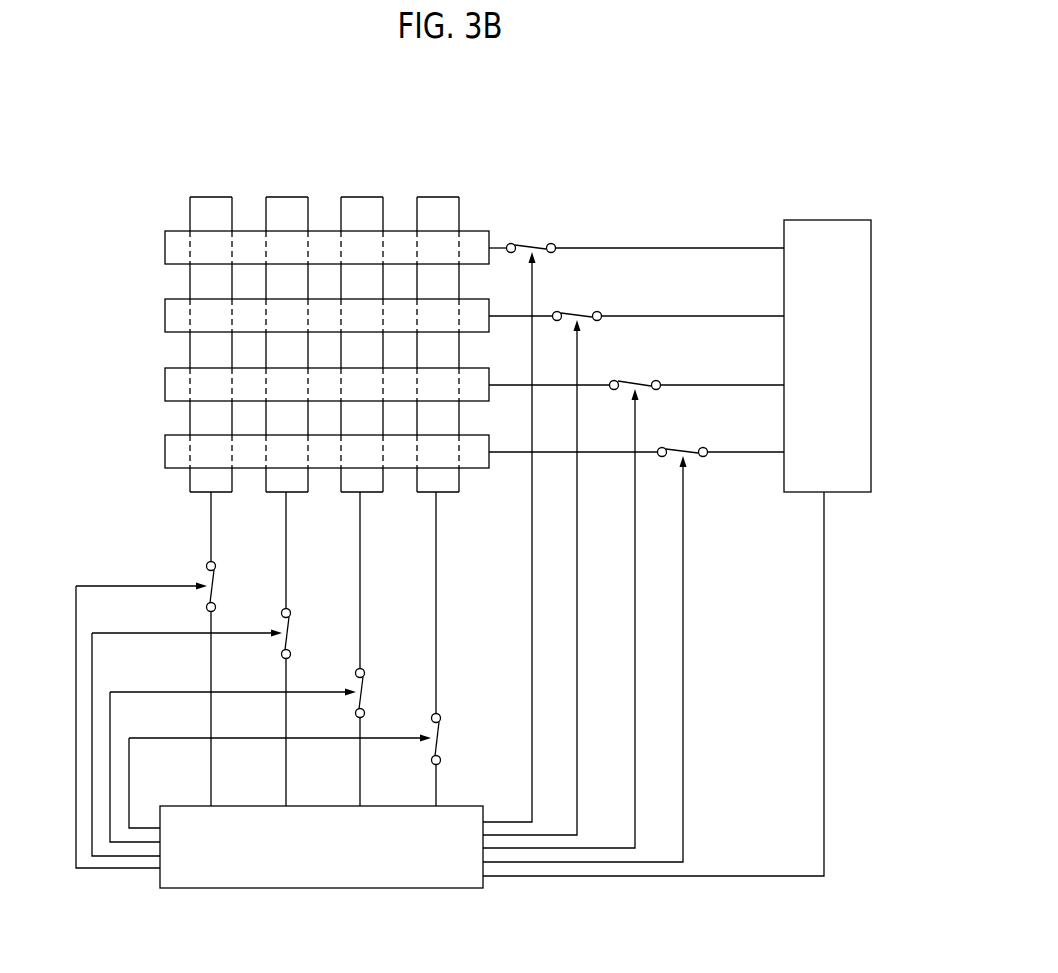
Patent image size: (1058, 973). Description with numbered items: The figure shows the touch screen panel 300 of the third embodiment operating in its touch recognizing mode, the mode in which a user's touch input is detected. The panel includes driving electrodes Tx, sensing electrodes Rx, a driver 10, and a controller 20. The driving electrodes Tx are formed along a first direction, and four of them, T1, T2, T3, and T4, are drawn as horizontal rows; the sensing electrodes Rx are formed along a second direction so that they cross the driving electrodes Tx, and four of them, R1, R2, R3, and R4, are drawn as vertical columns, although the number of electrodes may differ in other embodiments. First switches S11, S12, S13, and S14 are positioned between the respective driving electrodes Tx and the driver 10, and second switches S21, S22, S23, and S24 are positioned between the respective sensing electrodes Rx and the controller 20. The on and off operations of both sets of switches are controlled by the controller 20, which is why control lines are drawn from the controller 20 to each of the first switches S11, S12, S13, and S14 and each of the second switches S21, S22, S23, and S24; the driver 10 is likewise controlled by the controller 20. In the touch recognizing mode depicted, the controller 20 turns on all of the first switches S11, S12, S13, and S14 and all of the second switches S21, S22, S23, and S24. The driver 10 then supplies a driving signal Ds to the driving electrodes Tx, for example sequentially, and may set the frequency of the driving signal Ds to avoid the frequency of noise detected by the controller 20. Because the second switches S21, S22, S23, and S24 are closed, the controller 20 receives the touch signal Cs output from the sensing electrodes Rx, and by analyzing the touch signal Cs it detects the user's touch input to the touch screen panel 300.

The touch screen panel 300 is at (722, 138).
The driver 10 is at (826, 220).
The controller 20 is at (190, 806).
The sensing electrodes Rx is at (480, 141).
The sensing electrode R1 is at (211, 197).
The sensing electrode R2 is at (287, 197).
The sensing electrode R3 is at (362, 197).
The sensing electrode R4 is at (438, 197).
The driving electrodes Tx is at (105, 225).
The driving electrode T1 is at (165, 246).
The driving electrode T2 is at (165, 314).
The driving electrode T3 is at (165, 383).
The driving electrode T4 is at (165, 450).
The first switch S11 is at (633, 520).
The first switch S12 is at (633, 559).
The first switch S13 is at (633, 601).
The first switch S14 is at (633, 643).
The second switch S21 is at (166, 680).
The second switch S22 is at (212, 674).
The second switch S23 is at (258, 667).
The second switch S24 is at (305, 660).
The driving signal Ds is at (583, 234).
The touch signal Cs is at (196, 557).